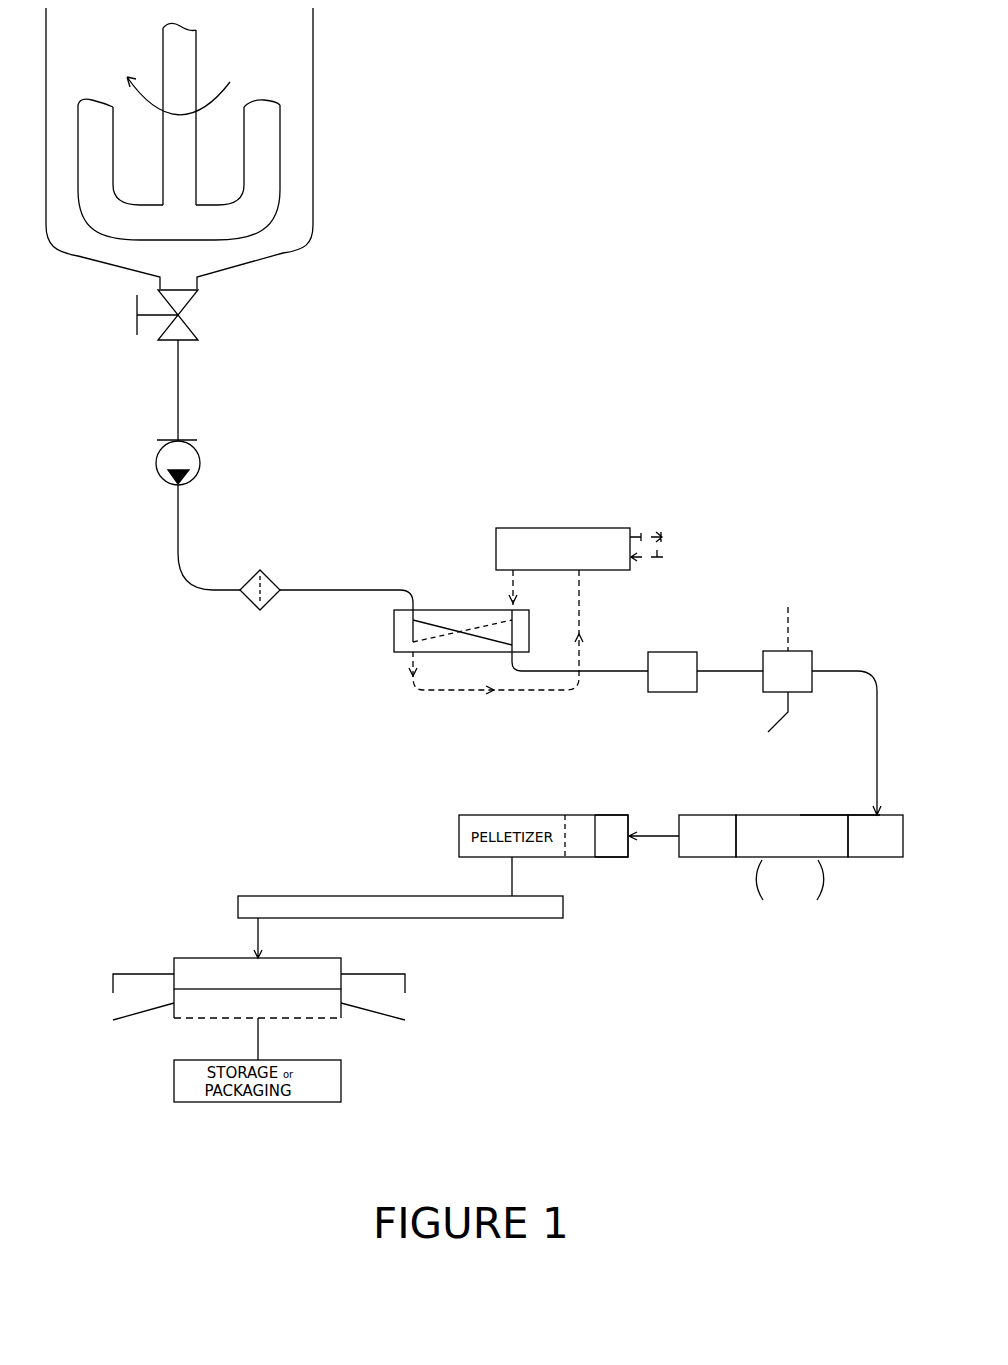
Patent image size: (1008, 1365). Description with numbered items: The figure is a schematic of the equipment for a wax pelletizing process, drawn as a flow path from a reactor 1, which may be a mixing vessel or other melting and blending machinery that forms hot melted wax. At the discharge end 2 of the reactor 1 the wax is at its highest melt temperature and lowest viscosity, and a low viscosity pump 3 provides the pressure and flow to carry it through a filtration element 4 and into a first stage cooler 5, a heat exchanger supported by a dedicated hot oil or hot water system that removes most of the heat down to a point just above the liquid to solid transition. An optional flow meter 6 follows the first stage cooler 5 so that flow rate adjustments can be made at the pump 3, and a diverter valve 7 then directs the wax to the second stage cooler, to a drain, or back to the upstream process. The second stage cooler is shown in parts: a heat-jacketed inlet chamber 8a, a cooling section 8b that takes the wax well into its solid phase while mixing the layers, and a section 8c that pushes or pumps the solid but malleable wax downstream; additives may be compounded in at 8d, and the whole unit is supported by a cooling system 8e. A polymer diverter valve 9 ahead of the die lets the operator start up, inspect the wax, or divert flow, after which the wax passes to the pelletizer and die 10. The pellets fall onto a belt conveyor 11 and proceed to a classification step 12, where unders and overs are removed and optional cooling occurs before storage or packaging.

The reactor 1 is at (313, 113).
The discharge end 2 is at (186, 297).
The low viscosity pump 3 is at (157, 474).
The filtration element 4 is at (248, 601).
The first stage cooler 5 is at (496, 548).
The flow meter 6 is at (672, 652).
The diverter valve 7 is at (812, 651).
The inlet chamber 8a is at (875, 836).
The cooling section 8b is at (792, 836).
The pushing section 8c is at (707, 836).
The additive compounding point 8d is at (860, 815).
The cooling system 8e is at (790, 884).
The polymer diverter valve 9 is at (612, 815).
The pelletizer and die 10 is at (580, 815).
The belt conveyor 11 is at (377, 896).
The classification step 12 is at (215, 958).